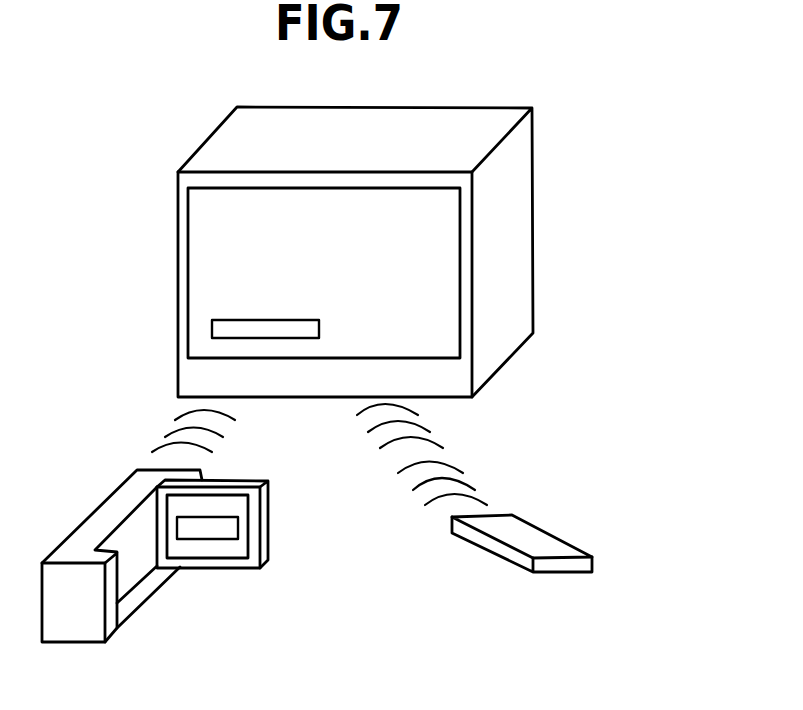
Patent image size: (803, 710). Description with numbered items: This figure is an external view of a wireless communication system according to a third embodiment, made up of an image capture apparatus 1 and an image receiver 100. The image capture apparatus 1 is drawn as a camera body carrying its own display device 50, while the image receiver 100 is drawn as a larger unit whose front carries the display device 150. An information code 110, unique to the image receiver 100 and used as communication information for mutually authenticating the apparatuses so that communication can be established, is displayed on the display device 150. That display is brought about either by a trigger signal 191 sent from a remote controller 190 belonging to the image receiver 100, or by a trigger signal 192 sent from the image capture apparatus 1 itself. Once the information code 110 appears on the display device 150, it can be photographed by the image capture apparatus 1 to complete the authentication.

The image capture apparatus 1 is at (90, 515).
The display device 50 is at (266, 562).
The image receiver 100 is at (523, 202).
The information code 110 is at (212, 330).
The display device 150 is at (442, 338).
The remote controller 190 is at (593, 563).
The trigger signal 191 is at (480, 500).
The trigger signal 192 is at (168, 433).